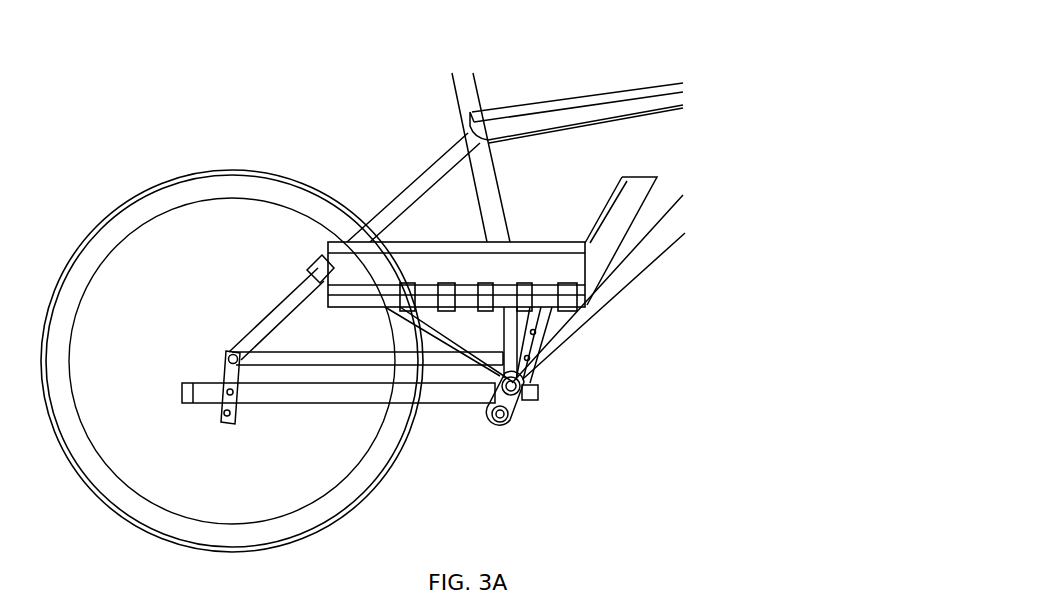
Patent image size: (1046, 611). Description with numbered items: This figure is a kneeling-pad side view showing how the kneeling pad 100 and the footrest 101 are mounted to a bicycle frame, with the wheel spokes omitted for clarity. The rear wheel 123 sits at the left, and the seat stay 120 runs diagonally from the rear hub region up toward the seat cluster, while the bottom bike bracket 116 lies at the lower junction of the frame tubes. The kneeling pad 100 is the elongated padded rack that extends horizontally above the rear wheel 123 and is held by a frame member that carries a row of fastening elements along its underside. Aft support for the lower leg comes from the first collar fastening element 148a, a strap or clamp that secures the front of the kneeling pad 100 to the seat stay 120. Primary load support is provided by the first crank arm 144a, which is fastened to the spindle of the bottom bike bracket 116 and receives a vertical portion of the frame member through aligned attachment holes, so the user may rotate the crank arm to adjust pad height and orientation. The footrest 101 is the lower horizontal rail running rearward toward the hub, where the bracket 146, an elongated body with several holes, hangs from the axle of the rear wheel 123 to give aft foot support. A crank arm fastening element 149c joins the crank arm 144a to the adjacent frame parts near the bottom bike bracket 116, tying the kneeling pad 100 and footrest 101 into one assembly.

The kneeling pad 100 is at (525, 229).
The footrest 101 is at (298, 413).
The bottom bike bracket 116 is at (540, 366).
The seat stay 120 is at (262, 330).
The rear wheel 123 is at (278, 177).
The first crank arm 144a is at (510, 422).
The bracket 146 is at (210, 410).
The first collar fastening element 148a is at (308, 266).
The pivot bracket 149c is at (520, 390).